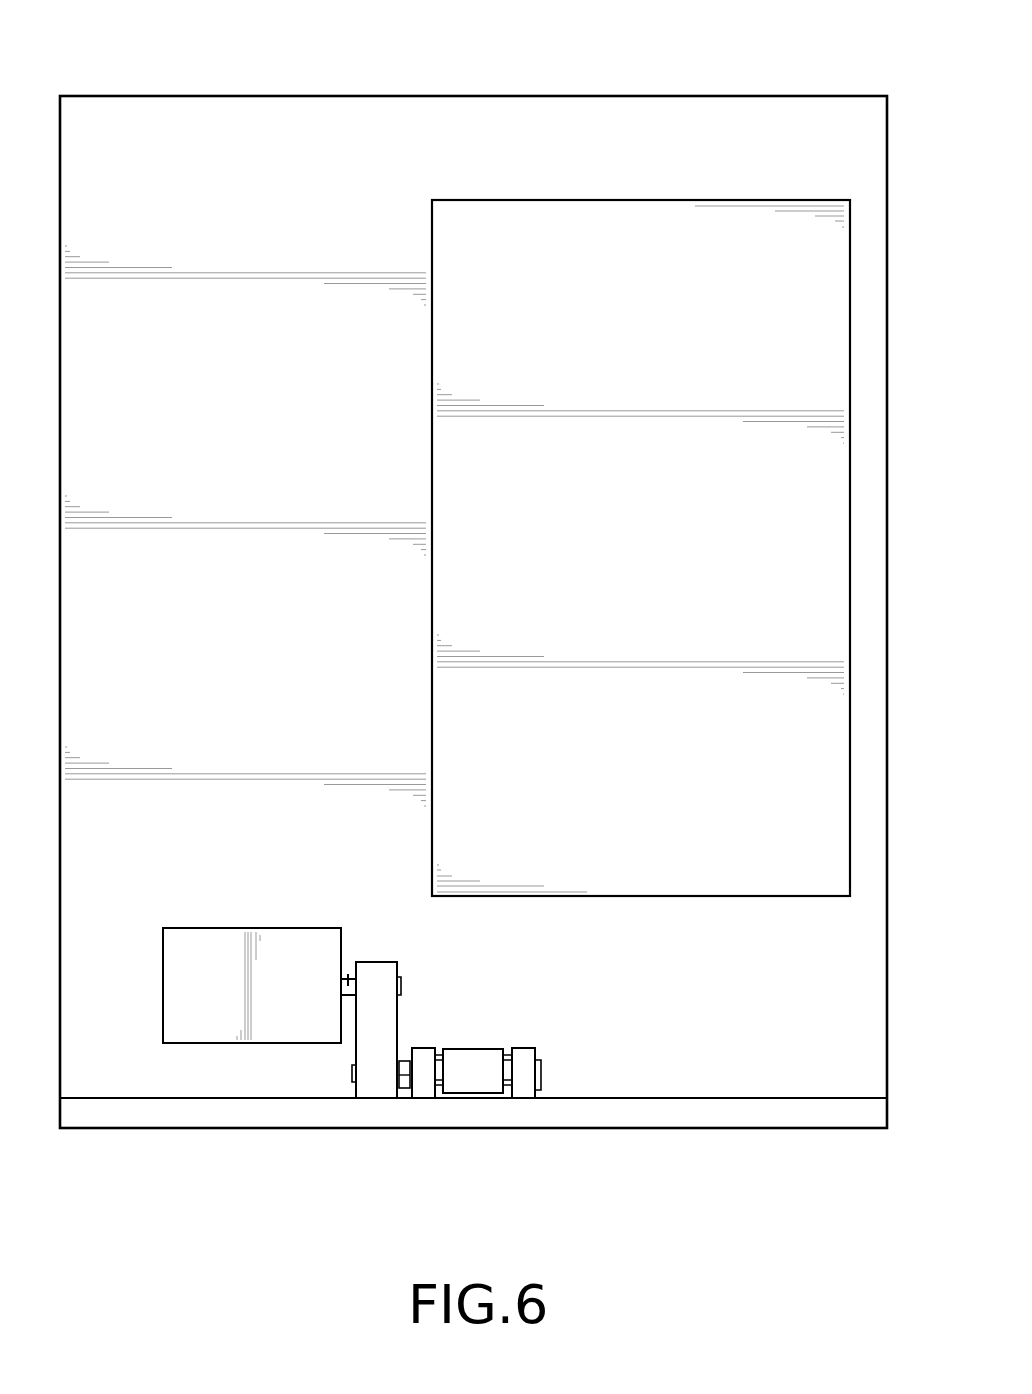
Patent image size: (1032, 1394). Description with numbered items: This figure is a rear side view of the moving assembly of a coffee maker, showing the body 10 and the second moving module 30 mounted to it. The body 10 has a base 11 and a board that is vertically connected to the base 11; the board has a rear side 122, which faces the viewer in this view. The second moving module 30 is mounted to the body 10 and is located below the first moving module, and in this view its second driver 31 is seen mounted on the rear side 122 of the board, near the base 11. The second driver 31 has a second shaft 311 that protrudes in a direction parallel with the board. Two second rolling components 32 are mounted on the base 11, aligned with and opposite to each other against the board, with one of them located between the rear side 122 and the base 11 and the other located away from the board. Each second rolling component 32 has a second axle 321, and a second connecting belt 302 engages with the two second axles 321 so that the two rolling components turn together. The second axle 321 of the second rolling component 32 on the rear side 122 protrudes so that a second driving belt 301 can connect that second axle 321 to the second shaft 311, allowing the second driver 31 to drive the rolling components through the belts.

The body 10 is at (563, 71).
The base 11 is at (786, 1113).
The rear side 122 is at (252, 145).
The second moving module 30 is at (229, 897).
The second driver 31 is at (181, 979).
The second shaft 311 is at (349, 978).
The second driving belt 301 is at (364, 1048).
The second axle 321 is at (405, 1070).
The second connecting belt 302 is at (474, 1058).
The second rolling component 32 is at (525, 1057).